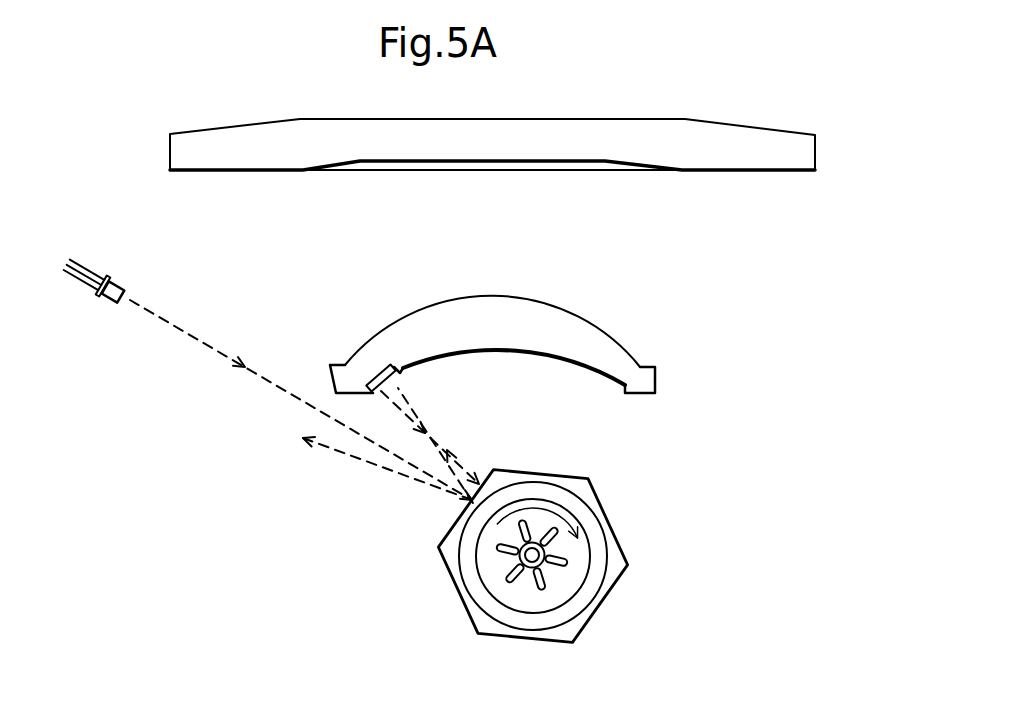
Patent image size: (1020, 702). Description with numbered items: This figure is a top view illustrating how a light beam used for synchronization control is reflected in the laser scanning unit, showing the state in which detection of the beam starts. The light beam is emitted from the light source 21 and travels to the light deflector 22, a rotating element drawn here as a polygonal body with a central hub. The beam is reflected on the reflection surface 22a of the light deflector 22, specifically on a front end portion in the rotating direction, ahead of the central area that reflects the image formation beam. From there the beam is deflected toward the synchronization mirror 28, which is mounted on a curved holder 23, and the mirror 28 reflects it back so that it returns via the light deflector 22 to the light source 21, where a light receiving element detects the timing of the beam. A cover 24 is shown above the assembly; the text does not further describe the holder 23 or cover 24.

The light source 21 is at (107, 300).
The light deflector 22 is at (510, 556).
The reflection surface 22a is at (441, 540).
The curved mirror holder 23 is at (655, 380).
The cover 24 is at (727, 170).
The synchronization mirror 28 is at (375, 377).